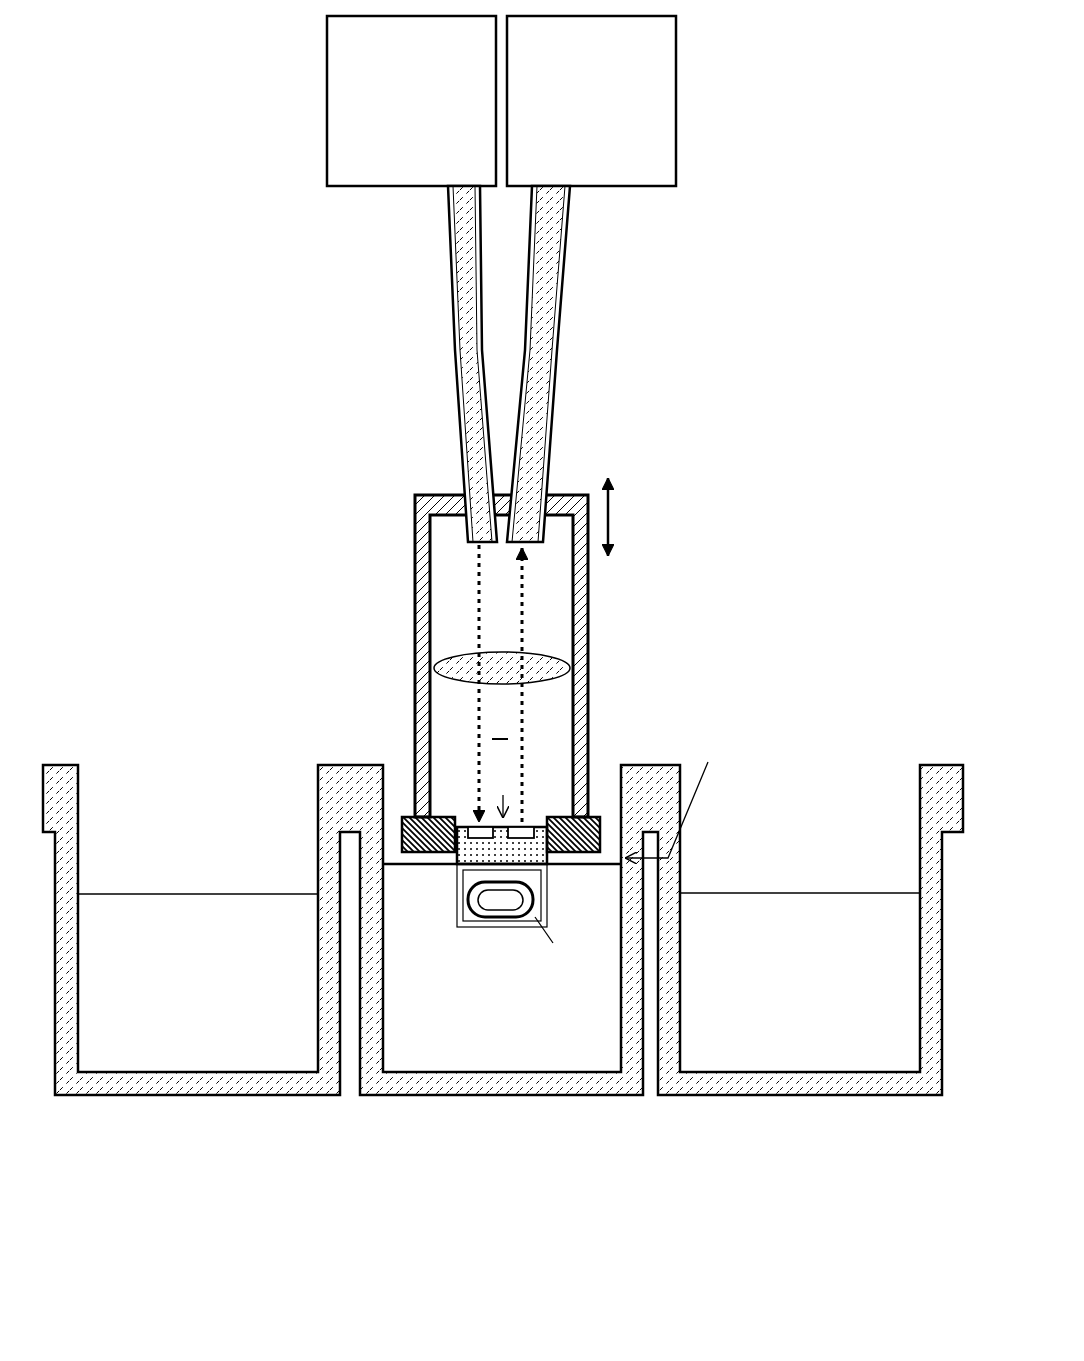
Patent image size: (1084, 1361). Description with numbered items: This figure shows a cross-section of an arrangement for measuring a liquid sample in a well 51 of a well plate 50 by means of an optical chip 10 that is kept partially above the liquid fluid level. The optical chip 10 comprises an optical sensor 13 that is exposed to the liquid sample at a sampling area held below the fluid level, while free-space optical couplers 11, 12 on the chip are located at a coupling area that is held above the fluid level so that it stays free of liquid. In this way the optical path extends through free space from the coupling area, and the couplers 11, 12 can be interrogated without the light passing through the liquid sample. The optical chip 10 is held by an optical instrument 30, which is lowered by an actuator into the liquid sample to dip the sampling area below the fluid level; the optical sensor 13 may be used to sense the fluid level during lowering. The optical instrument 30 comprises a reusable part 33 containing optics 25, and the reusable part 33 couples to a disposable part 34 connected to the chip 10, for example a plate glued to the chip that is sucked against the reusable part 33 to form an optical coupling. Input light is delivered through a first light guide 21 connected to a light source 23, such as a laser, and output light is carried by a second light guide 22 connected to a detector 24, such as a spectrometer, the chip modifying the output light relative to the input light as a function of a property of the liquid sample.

The optical chip 10 is at (495, 859).
The free-space optical coupler 11 is at (470, 818).
The free-space optical coupler 12 is at (535, 818).
The optical sensor 13 is at (545, 895).
The first light guide 21 is at (462, 553).
The second light guide 22 is at (548, 553).
The light source 23 is at (396, 113).
The detector 24 is at (577, 113).
The optics 25 is at (562, 668).
The optical instrument 30 is at (325, 637).
The reusable part 33 is at (422, 690).
The disposable part 34 is at (412, 822).
The well plate 50 is at (143, 722).
The well 51 is at (189, 1118).